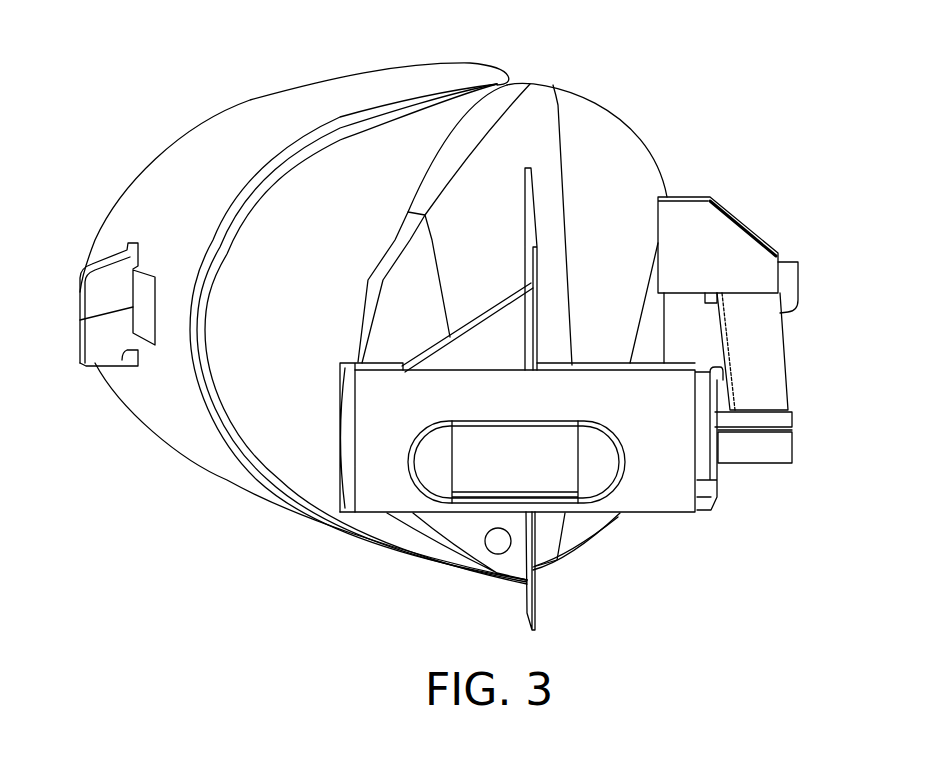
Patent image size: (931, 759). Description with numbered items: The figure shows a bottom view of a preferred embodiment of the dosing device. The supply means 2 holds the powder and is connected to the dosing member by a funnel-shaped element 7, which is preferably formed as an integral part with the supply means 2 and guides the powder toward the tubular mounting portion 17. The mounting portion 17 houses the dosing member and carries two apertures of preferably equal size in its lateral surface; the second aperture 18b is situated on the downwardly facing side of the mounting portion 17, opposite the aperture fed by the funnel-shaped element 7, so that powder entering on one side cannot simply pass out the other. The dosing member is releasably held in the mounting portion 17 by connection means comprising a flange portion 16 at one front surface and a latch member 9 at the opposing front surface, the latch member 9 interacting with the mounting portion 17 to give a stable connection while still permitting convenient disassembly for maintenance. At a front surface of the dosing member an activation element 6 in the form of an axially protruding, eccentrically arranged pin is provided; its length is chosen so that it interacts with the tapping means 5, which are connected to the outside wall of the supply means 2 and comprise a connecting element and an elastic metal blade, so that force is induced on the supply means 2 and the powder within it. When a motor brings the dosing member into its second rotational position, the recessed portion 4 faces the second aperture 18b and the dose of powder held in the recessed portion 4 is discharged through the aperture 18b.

The supply means 2 is at (260, 124).
The recessed portion 4 is at (425, 515).
The tapping means 5 is at (762, 352).
The activation element 6 is at (763, 422).
The funnel-shaped element 7 is at (735, 232).
The latch member 9 is at (707, 503).
The flange portion 16 is at (387, 500).
The mounting portion 17 is at (653, 503).
The second aperture 18b is at (473, 507).